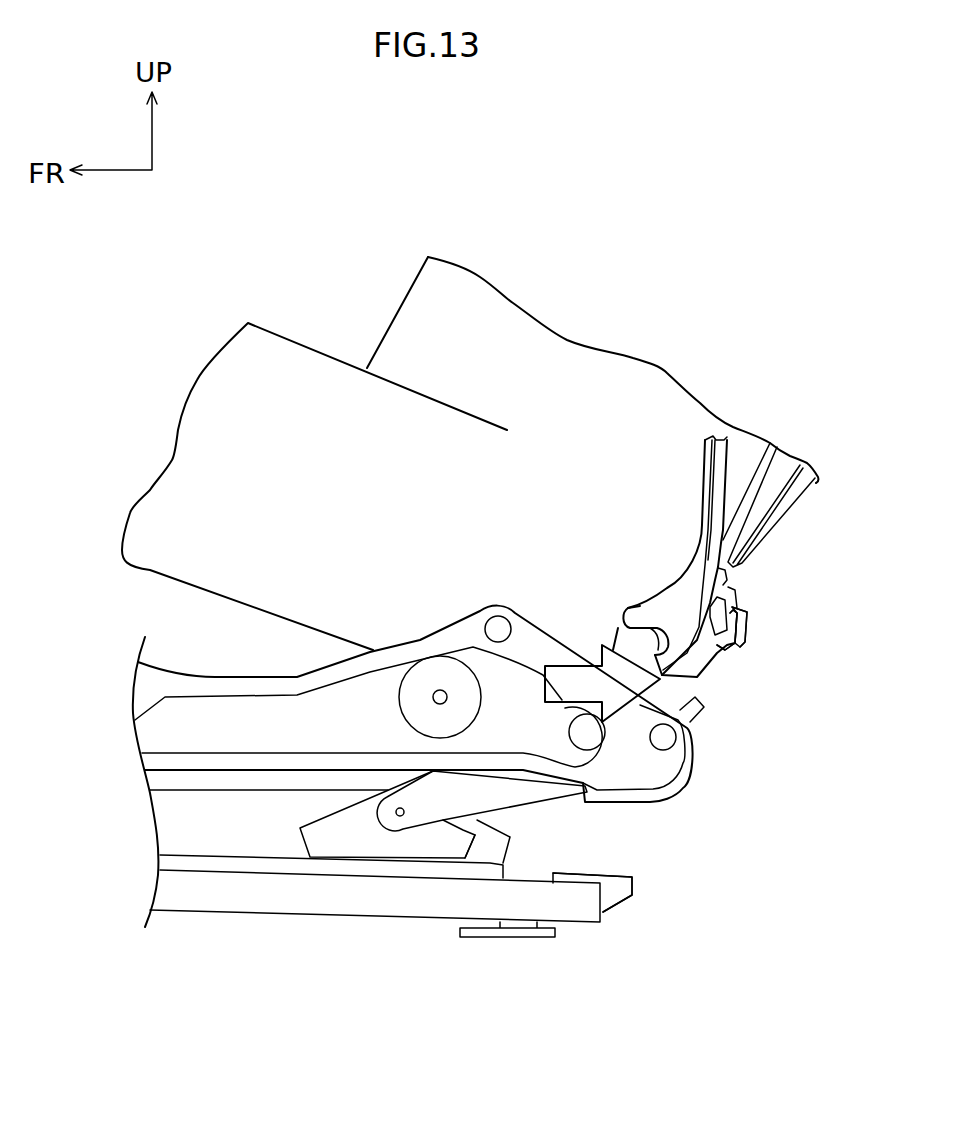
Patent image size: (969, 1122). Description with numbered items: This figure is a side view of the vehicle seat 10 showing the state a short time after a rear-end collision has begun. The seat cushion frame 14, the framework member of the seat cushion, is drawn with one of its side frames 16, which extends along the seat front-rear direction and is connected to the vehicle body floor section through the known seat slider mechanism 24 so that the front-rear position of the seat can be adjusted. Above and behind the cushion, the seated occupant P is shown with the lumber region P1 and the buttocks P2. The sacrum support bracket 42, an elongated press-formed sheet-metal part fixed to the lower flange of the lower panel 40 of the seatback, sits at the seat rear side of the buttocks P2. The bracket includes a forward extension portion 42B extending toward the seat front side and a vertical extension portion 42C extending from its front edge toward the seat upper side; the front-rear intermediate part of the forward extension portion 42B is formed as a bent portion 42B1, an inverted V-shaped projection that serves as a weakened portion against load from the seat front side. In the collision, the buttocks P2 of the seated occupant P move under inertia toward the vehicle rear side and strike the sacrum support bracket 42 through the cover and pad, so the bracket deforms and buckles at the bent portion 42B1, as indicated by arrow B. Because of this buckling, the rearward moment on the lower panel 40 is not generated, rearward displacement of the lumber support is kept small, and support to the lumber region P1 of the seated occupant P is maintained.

The seated occupant P is at (390, 295).
The lumber region P1 is at (630, 413).
The buttocks P2 is at (527, 587).
The arrow B is at (580, 663).
The seat cushion frame 14 is at (416, 619).
The side frames 16 is at (245, 742).
The vehicle seat 10 is at (338, 960).
The seat slider mechanism 24 is at (669, 915).
The lower panel 40 is at (785, 507).
The sacrum support bracket 42 is at (660, 594).
The vertical extension portion 42C is at (627, 594).
The bent portion 42B1 is at (665, 638).
The forward extension portion 42B is at (727, 630).